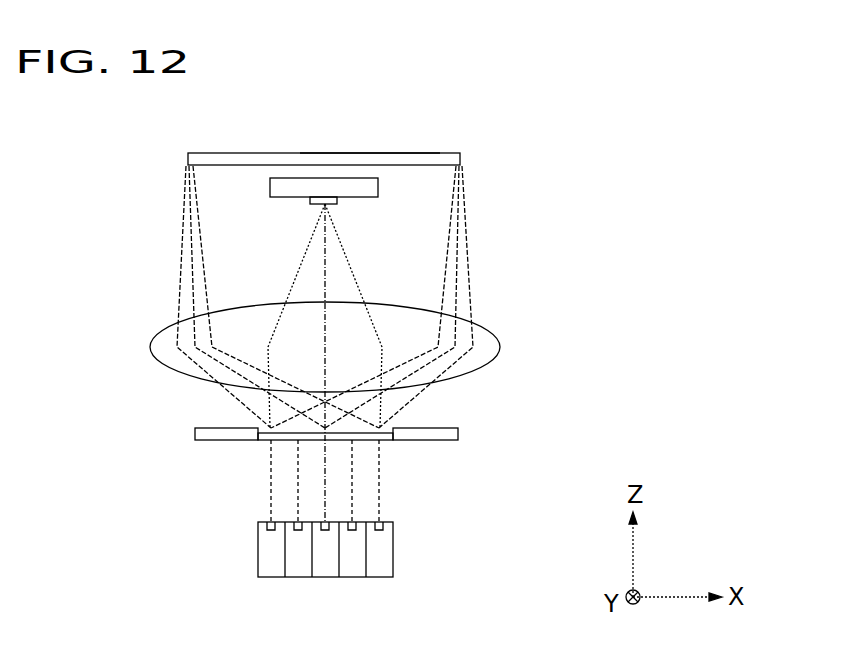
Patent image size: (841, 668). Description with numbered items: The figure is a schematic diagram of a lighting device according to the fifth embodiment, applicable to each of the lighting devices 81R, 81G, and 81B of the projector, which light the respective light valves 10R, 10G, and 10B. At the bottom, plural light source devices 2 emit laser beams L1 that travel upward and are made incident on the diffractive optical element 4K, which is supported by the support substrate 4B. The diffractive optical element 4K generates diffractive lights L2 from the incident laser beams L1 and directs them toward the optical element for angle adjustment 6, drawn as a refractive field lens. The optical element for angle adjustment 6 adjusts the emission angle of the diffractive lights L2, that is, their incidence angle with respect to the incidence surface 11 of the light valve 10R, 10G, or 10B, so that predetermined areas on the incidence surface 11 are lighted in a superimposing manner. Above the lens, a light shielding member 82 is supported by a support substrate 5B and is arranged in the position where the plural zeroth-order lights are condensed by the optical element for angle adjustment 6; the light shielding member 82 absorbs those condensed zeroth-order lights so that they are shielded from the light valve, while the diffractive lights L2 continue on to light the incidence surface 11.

The incidence surface 11 is at (353, 172).
The light valve 10R is at (420, 133).
The light valve 10G is at (420, 133).
The light valve 10B is at (460, 153).
The support substrate 5B is at (378, 188).
The light shielding member 82 is at (337, 201).
The optical element for angle adjustment 6 is at (485, 330).
The lighting device 81R is at (438, 372).
The lighting device 81G is at (438, 372).
The lighting device 81B is at (551, 316).
The diffractive light L2 is at (230, 403).
The support substrate 4B is at (458, 433).
The diffractive optical element 4K is at (387, 440).
The laser beam L1 is at (388, 502).
The light source device 2 is at (298, 578).